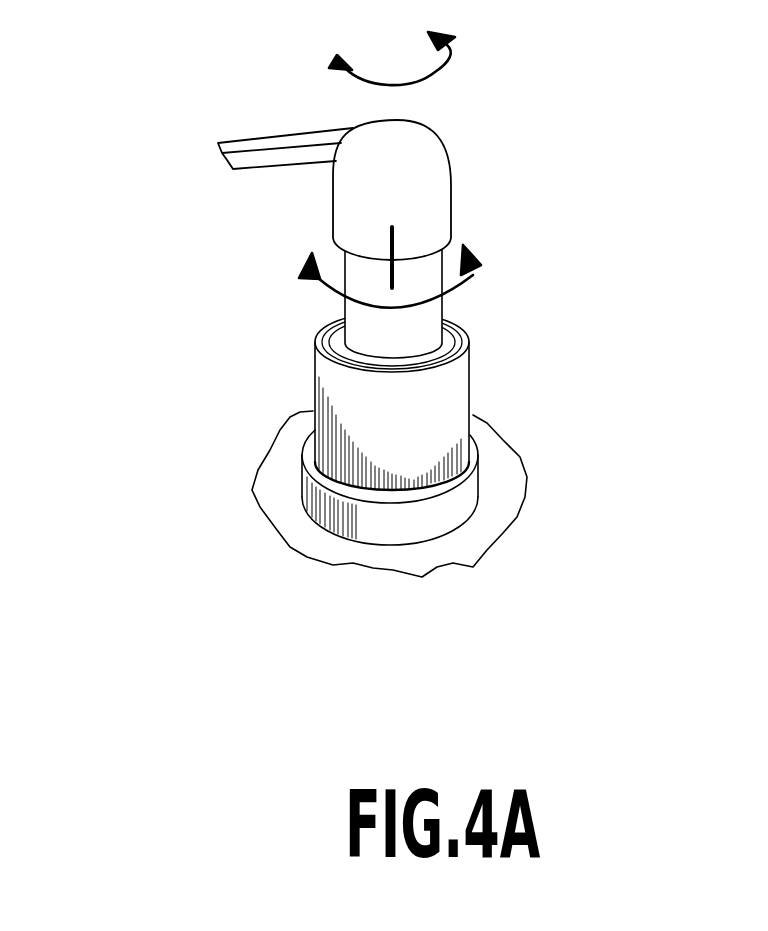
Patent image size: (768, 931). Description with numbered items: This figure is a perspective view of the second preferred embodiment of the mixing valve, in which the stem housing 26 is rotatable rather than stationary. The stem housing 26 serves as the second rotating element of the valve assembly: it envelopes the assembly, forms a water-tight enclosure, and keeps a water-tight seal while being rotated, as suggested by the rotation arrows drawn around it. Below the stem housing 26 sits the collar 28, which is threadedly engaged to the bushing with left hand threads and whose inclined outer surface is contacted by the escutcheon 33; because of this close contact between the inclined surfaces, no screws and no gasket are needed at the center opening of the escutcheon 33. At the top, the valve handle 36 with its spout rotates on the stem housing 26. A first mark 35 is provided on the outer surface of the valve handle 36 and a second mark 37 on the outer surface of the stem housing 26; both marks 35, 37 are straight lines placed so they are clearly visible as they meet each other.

The stem housing 26 is at (470, 390).
The collar 28 is at (478, 488).
The escutcheon 33 is at (480, 528).
The first mark 35 is at (394, 240).
The valve handle 36 is at (451, 192).
The second mark 37 is at (394, 277).